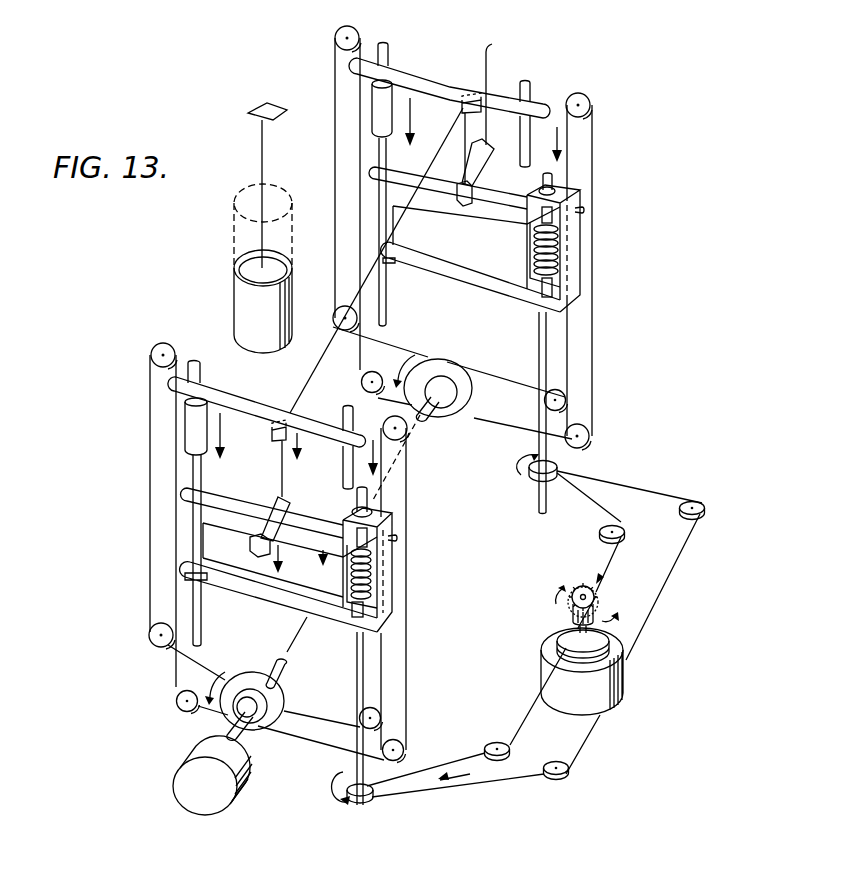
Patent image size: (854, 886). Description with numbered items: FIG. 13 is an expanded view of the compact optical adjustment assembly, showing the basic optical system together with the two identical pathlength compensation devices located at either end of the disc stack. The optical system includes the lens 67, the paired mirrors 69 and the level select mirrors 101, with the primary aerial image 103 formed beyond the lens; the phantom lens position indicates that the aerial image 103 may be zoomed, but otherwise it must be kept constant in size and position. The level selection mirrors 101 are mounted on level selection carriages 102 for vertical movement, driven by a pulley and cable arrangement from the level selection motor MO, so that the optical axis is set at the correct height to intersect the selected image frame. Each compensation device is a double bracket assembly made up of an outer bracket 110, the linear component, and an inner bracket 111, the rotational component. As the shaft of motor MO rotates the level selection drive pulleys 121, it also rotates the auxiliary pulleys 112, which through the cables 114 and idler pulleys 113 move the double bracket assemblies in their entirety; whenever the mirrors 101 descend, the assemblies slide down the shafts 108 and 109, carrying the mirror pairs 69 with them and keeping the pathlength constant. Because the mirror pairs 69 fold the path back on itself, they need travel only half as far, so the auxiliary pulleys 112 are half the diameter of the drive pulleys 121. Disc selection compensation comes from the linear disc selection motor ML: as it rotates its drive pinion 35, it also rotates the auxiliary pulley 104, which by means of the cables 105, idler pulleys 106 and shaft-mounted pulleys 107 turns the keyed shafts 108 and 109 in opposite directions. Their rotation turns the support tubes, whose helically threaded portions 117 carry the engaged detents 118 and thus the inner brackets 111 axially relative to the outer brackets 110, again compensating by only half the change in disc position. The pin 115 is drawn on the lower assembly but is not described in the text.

The pinion 35 is at (598, 594).
The lens 67 is at (240, 303).
The paired mirrors 69 is at (462, 200).
The level select mirrors 101 is at (463, 108).
The level selection carriages 102 is at (430, 77).
The primary aerial image 103 is at (281, 110).
The auxiliary pulley 104 is at (607, 644).
The cables 105 is at (588, 742).
The idler pulleys 106 is at (700, 502).
The shaft-mounted pulleys 107 is at (558, 468).
The shaft 108 is at (538, 500).
The shaft 109 is at (346, 762).
The outer brackets 110 is at (577, 262).
The inner brackets 111 is at (308, 523).
The auxiliary pulleys 112 is at (460, 405).
The idler pulleys 113 is at (593, 108).
The cables 114 is at (592, 320).
The pin 115 is at (272, 662).
The helically threaded portion of tubes 117 is at (557, 243).
The detents 118 is at (523, 242).
The level selection drive pulleys 121 is at (452, 362).
The linear disc selection motor ML is at (609, 692).
The level selection motor MO is at (183, 783).